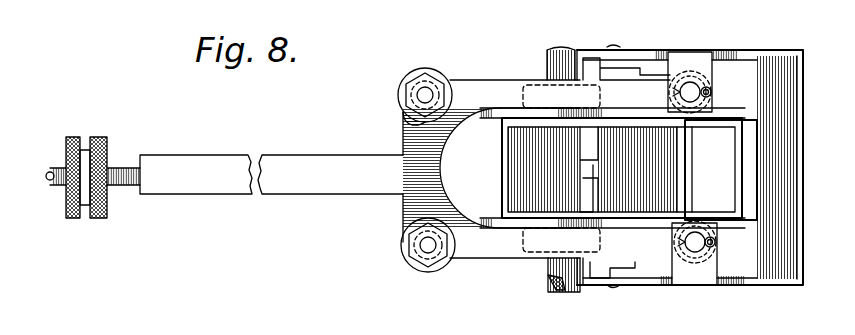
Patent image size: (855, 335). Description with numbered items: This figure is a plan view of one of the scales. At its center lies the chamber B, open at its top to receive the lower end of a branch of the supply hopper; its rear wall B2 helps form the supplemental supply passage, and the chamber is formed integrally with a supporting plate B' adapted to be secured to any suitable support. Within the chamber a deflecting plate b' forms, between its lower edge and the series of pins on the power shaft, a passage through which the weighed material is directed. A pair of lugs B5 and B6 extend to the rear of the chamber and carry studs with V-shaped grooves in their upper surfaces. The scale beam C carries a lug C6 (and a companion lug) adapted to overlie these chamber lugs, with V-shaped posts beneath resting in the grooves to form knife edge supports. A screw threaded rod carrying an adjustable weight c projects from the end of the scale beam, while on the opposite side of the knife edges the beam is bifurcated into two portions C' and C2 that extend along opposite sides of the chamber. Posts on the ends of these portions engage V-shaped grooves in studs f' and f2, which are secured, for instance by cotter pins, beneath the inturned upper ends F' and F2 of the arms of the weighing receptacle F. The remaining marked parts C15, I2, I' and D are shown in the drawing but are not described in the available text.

The adjustable weight c is at (93, 167).
The scale beam C is at (271, 194).
The yoke body C15 is at (418, 268).
The bifurcated portion of scale beam C2 is at (505, 82).
The bifurcated portion of scale beam C' is at (515, 272).
The lug C6 is at (442, 72).
The lug B6 is at (403, 110).
The lug B5 is at (452, 262).
The rear wall B2 is at (546, 116).
The supporting plate B' is at (612, 251).
The deflecting plate b' is at (561, 240).
The chamber B is at (622, 181).
The upper slide piece I2 is at (598, 128).
The lower slide piece I' is at (621, 231).
The stop D is at (560, 290).
The weighing receptacle F is at (690, 183).
The upper end of receptacle arm F2 is at (692, 55).
The stud f2 is at (712, 92).
The upper end of receptacle arm F' is at (694, 271).
The stud f' is at (724, 249).